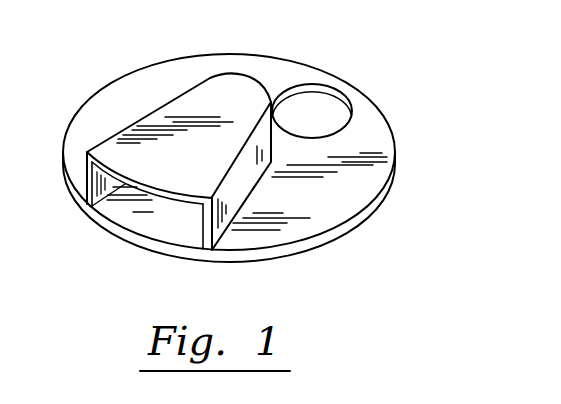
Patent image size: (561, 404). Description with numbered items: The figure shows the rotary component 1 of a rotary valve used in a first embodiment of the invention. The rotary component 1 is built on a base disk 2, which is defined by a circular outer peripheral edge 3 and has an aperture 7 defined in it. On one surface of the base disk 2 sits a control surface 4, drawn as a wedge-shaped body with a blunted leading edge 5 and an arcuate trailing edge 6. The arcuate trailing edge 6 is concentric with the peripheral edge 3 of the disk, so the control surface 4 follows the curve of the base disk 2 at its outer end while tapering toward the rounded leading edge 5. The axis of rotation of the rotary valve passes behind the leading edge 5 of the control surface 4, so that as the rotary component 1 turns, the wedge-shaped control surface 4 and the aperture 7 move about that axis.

The rotary component 1 is at (398, 118).
The base disk 2 is at (350, 204).
The circular outer peripheral edge 3 is at (337, 238).
The control surface 4 is at (173, 147).
The blunted leading edge 5 is at (245, 76).
The arcuate trailing edge 6 is at (176, 205).
The aperture 7 is at (340, 92).